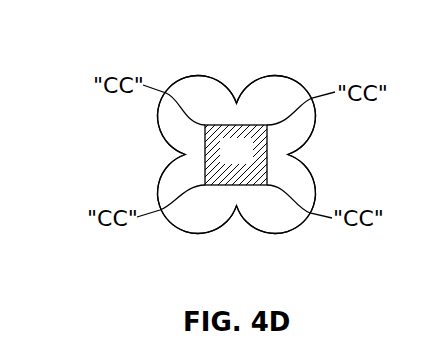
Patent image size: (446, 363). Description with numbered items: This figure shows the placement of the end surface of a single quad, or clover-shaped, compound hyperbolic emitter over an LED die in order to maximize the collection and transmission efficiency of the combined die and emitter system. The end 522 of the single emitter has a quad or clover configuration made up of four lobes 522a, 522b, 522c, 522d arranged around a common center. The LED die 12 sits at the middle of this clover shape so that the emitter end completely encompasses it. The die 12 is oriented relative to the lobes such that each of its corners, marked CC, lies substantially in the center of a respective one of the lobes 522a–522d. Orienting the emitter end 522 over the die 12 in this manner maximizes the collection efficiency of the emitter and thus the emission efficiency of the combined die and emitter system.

The end of a single compound hyperbolic emitter 522 is at (147, 133).
The lobe 522a is at (196, 233).
The lobe 522b is at (280, 234).
The lobe 522c is at (278, 75).
The lobe 522d is at (200, 75).
The LED die 12 is at (251, 162).